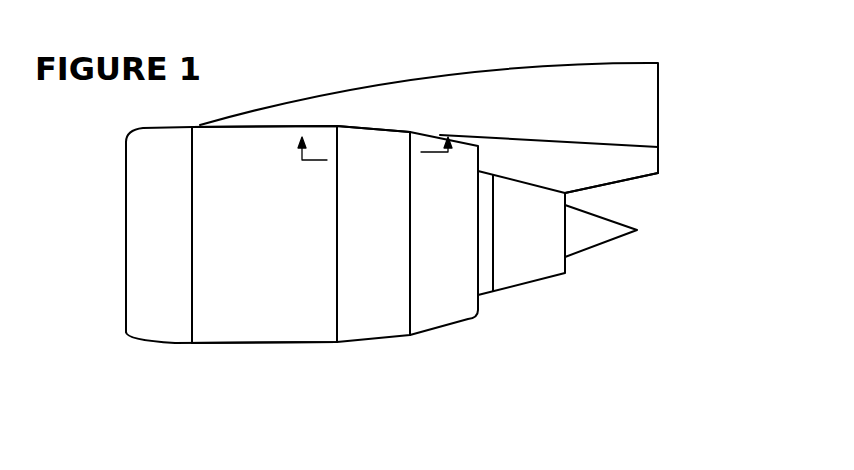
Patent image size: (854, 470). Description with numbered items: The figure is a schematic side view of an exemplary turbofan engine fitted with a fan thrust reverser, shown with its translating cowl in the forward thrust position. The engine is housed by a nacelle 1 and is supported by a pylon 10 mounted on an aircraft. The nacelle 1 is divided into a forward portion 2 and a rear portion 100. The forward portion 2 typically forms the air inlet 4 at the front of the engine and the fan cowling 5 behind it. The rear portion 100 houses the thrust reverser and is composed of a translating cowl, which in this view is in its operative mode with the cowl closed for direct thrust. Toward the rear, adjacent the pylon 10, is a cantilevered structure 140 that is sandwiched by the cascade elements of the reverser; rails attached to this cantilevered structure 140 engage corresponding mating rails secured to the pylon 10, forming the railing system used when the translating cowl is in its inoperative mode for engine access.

The nacelle 1 is at (352, 282).
The forward portion 2 is at (332, 360).
The air inlet 4 is at (143, 228).
The fan cowling 5 is at (230, 171).
The pylon 10 is at (633, 78).
The rear portion 100 is at (480, 357).
The cantilevered structure 140 is at (638, 162).